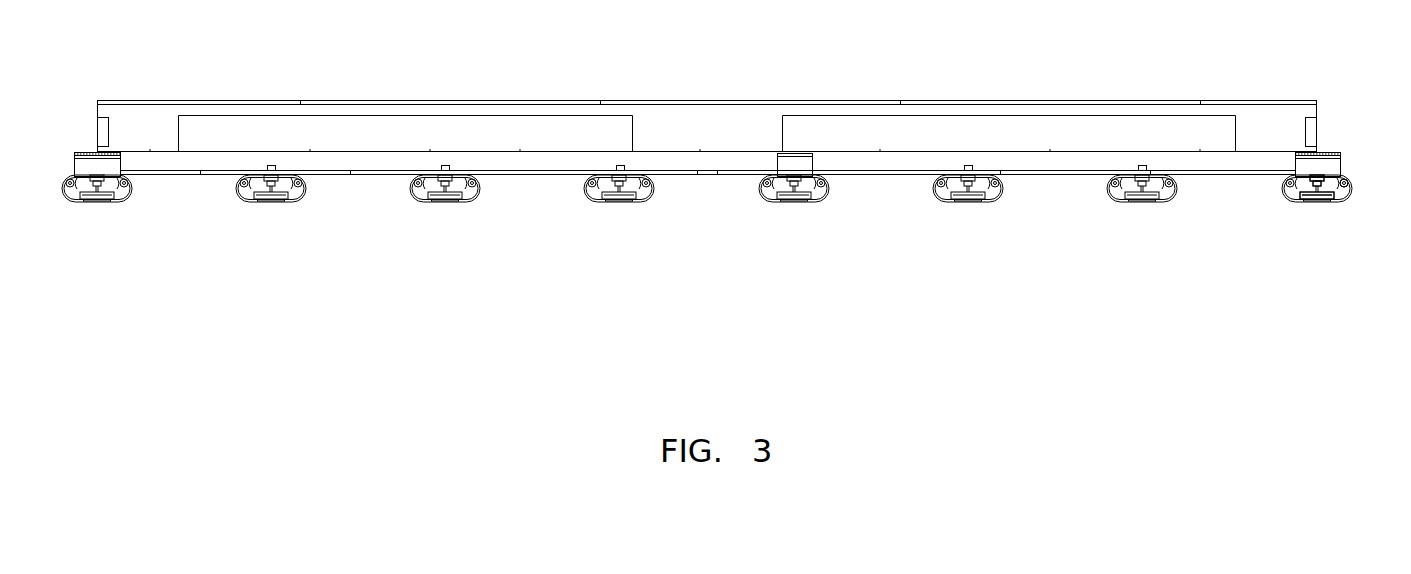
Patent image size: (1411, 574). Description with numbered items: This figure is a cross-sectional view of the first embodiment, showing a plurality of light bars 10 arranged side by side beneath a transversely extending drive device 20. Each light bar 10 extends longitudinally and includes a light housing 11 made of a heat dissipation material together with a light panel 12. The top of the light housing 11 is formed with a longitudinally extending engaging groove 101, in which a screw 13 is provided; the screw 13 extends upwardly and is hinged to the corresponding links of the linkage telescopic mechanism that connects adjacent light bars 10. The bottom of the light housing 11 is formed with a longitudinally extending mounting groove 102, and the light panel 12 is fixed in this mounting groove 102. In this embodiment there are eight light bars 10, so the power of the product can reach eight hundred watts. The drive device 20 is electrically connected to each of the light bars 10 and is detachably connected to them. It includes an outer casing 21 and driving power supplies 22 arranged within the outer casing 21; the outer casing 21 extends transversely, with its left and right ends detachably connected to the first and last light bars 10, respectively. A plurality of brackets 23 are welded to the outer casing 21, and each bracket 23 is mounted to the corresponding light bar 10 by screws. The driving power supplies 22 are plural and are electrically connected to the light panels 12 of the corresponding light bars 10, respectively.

The light bar 10 is at (1288, 197).
The light housing 11 is at (1300, 177).
The light panel 12 is at (1323, 200).
The screw 13 is at (1343, 195).
The engaging groove 101 is at (1323, 179).
The mounting groove 102 is at (1308, 199).
The drive device 20 is at (620, 102).
The outer casing 21 is at (718, 103).
The driving power supply 22 is at (560, 135).
The bracket 23 is at (1330, 152).